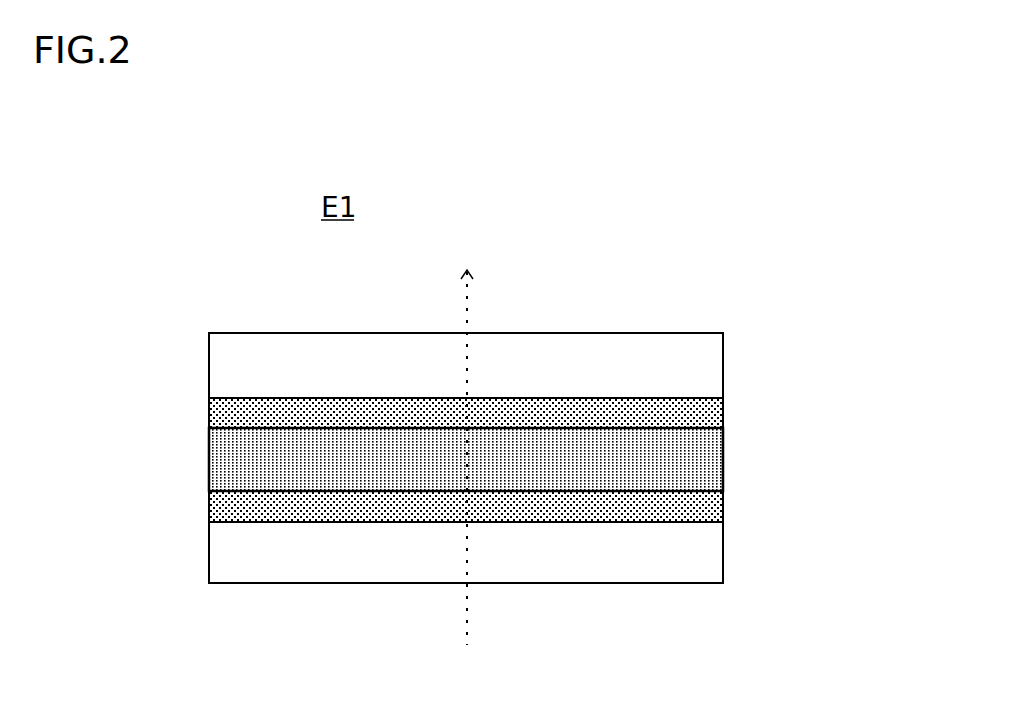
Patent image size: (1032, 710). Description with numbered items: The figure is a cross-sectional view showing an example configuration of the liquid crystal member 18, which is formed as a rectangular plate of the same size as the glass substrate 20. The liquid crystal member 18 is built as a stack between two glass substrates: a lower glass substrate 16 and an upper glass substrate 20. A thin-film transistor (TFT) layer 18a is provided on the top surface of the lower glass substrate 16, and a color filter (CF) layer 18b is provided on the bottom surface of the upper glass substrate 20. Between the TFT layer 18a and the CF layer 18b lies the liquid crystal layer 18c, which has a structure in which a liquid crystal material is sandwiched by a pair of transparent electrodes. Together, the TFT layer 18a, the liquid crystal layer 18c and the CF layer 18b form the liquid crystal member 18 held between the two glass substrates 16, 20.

The glass substrate 16 is at (628, 583).
The glass substrate 20 is at (628, 333).
The liquid crystal member 18 is at (567, 457).
The thin-film transistor (TFT) layer 18a is at (528, 506).
The color filter (CF) layer 18b is at (723, 410).
The liquid crystal layer 18c is at (723, 457).